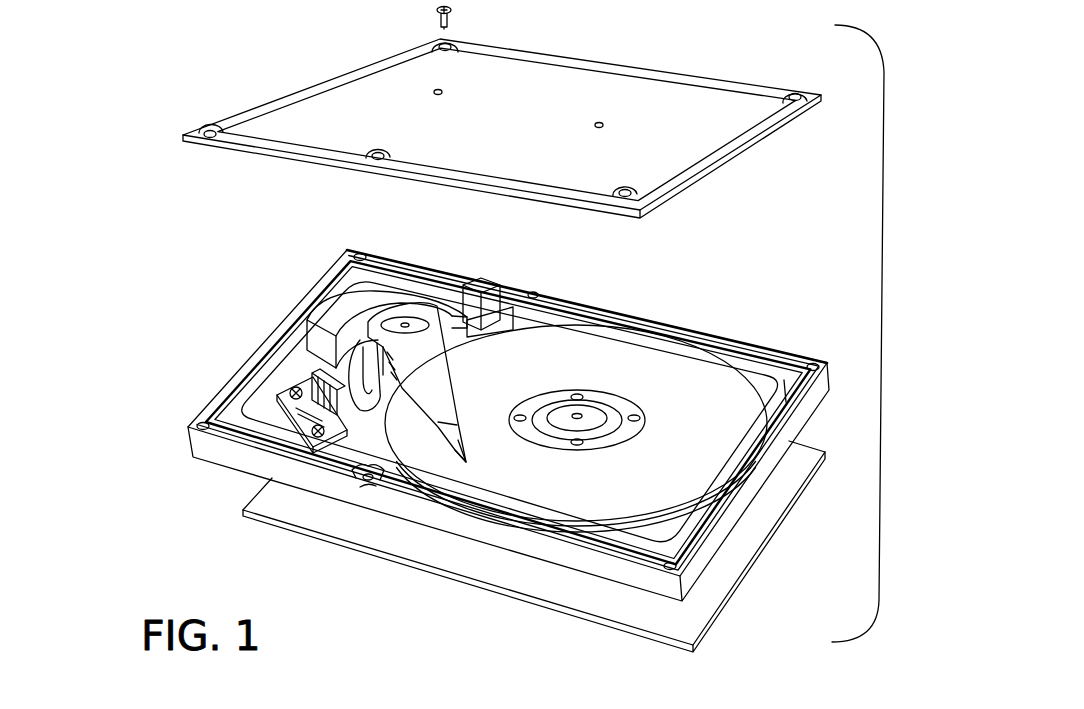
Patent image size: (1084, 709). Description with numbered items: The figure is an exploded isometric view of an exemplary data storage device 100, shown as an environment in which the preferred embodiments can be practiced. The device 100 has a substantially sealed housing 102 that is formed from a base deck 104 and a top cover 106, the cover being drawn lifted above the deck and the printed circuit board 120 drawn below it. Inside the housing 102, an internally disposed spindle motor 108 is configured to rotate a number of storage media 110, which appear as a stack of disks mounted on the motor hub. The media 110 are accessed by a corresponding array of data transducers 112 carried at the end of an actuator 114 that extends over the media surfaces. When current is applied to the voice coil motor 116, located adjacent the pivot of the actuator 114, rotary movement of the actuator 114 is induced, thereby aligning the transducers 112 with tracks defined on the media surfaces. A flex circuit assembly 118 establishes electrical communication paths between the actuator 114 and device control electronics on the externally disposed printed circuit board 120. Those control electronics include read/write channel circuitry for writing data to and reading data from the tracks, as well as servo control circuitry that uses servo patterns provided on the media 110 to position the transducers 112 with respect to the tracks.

The data storage device 100 is at (245, 48).
The housing 102 is at (232, 250).
The base deck 104 is at (742, 503).
The top cover 106 is at (597, 83).
The spindle motor 108 is at (592, 412).
The storage media 110 is at (605, 523).
The data transducers 112 is at (463, 462).
The actuator 114 is at (437, 388).
The voice coil motor 116 is at (388, 290).
The flex circuit assembly 118 is at (355, 412).
The printed circuit board 120 is at (365, 553).